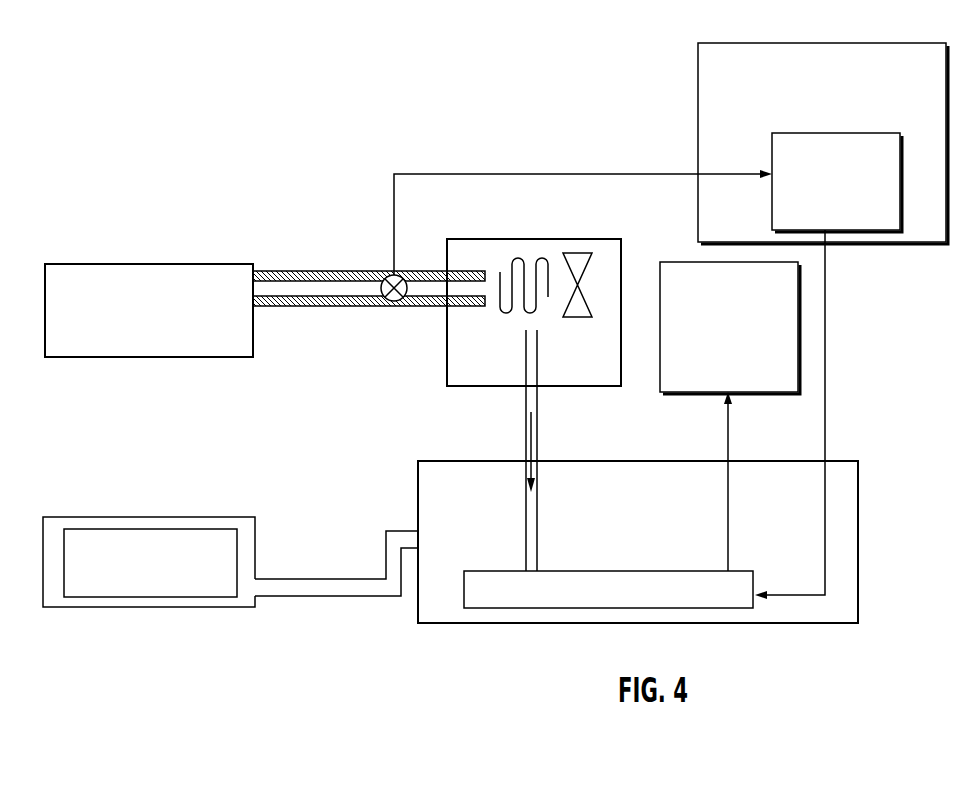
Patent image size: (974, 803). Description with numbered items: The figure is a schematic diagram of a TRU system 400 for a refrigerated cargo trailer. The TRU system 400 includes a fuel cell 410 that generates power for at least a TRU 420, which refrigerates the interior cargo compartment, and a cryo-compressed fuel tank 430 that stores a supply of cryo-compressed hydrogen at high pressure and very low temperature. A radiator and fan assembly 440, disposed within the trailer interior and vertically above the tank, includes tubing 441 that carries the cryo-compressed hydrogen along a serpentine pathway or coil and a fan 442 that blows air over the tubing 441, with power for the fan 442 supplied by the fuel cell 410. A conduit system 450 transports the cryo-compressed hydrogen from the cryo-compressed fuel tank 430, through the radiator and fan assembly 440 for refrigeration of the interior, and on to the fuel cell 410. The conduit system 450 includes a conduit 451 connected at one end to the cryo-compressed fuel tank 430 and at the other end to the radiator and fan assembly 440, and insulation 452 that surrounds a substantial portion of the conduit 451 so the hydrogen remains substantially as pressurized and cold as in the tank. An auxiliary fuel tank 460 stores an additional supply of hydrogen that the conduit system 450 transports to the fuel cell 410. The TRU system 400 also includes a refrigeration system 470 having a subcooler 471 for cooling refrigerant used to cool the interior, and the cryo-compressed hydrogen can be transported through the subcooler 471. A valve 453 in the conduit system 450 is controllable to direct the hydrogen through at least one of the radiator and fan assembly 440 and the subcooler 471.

The TRU system 400 is at (300, 421).
The fuel cell 410 is at (521, 596).
The TRU 420 is at (748, 330).
The cryo-compressed fuel tank 430 is at (57, 347).
The radiator and fan assembly 440 is at (600, 391).
The tubing 441 is at (519, 262).
The fan 442 is at (577, 268).
The conduit system 450 is at (427, 314).
The conduit 451 is at (327, 287).
The insulation 452 is at (302, 270).
The valve 453 is at (391, 301).
The auxiliary fuel tank 460 is at (57, 600).
The refrigeration system 470 is at (840, 117).
The subcooler 471 is at (854, 205).